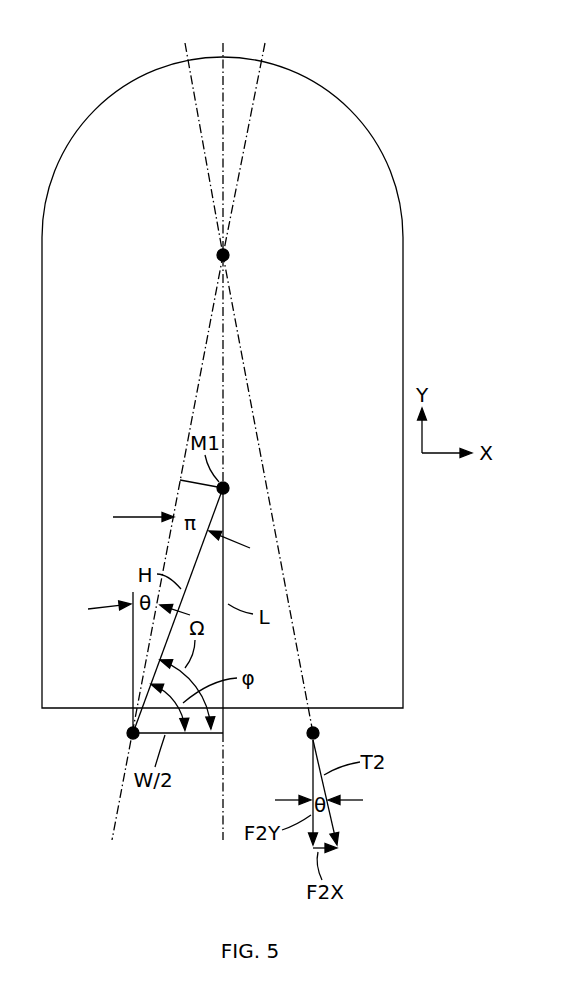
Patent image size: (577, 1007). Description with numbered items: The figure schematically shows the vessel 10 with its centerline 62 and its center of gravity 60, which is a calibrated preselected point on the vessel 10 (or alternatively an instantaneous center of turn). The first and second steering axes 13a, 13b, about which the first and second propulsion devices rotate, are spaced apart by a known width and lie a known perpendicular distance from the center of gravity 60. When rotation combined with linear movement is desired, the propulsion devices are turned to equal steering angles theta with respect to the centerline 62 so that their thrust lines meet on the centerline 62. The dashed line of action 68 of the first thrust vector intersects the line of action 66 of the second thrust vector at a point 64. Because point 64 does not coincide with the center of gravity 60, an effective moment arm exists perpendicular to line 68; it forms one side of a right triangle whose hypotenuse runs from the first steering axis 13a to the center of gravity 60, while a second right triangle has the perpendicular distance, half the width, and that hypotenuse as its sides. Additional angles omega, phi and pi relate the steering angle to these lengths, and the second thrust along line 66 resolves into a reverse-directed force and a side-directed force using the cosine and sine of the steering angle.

The vessel 10 is at (395, 205).
The centerline 62 is at (222, 132).
The line of action 66 is at (190, 93).
The line of action 68 is at (252, 115).
The point 64 is at (230, 258).
The center of gravity 60 is at (229, 487).
The first steering axis 13a is at (126, 738).
The second steering axis 13b is at (320, 732).